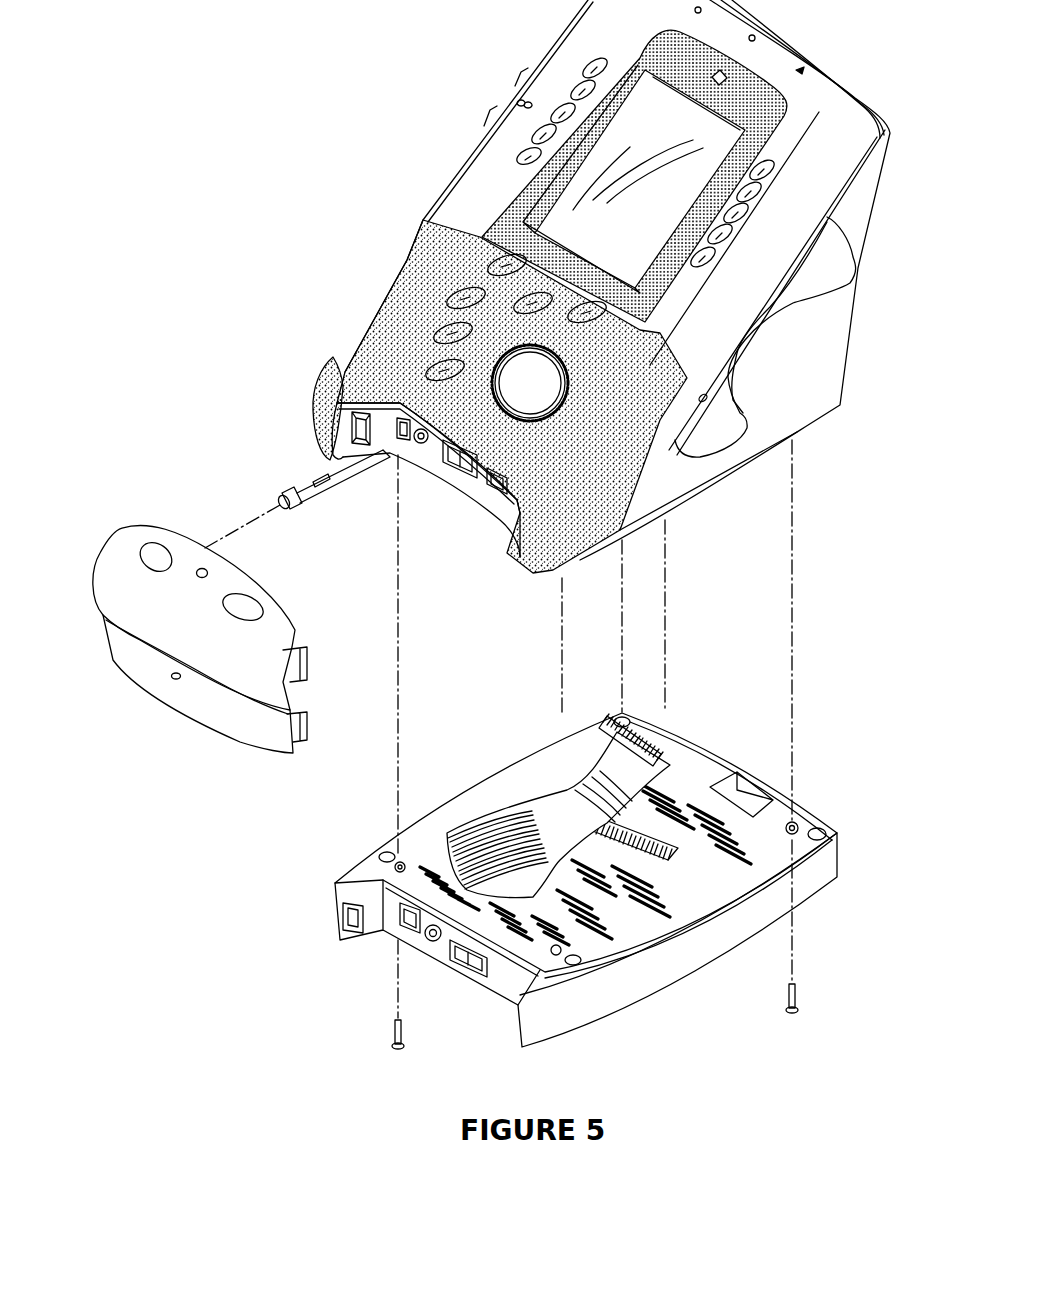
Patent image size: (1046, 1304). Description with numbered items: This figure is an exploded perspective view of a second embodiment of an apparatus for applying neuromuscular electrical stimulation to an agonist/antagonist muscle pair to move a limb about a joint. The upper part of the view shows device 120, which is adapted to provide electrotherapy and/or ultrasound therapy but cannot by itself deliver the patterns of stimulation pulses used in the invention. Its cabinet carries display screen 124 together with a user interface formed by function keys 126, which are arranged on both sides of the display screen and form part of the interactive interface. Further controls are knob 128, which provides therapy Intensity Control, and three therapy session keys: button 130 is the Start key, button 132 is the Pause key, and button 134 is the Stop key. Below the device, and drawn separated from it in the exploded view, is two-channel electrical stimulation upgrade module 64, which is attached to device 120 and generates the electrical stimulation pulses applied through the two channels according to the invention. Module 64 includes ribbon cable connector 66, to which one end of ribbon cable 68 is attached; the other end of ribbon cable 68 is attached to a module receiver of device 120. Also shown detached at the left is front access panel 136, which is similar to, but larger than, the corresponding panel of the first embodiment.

The device 120 is at (833, 60).
The display screen 124 is at (750, 130).
The function keys 126 is at (782, 170).
The knob 128 is at (535, 397).
The button 130 is at (415, 354).
The button 132 is at (417, 313).
The button 134 is at (447, 276).
The front access panel 136 is at (191, 721).
The upgrade module 64 is at (820, 807).
The ribbon cable connector 66 is at (690, 857).
The ribbon cable 68 is at (507, 802).